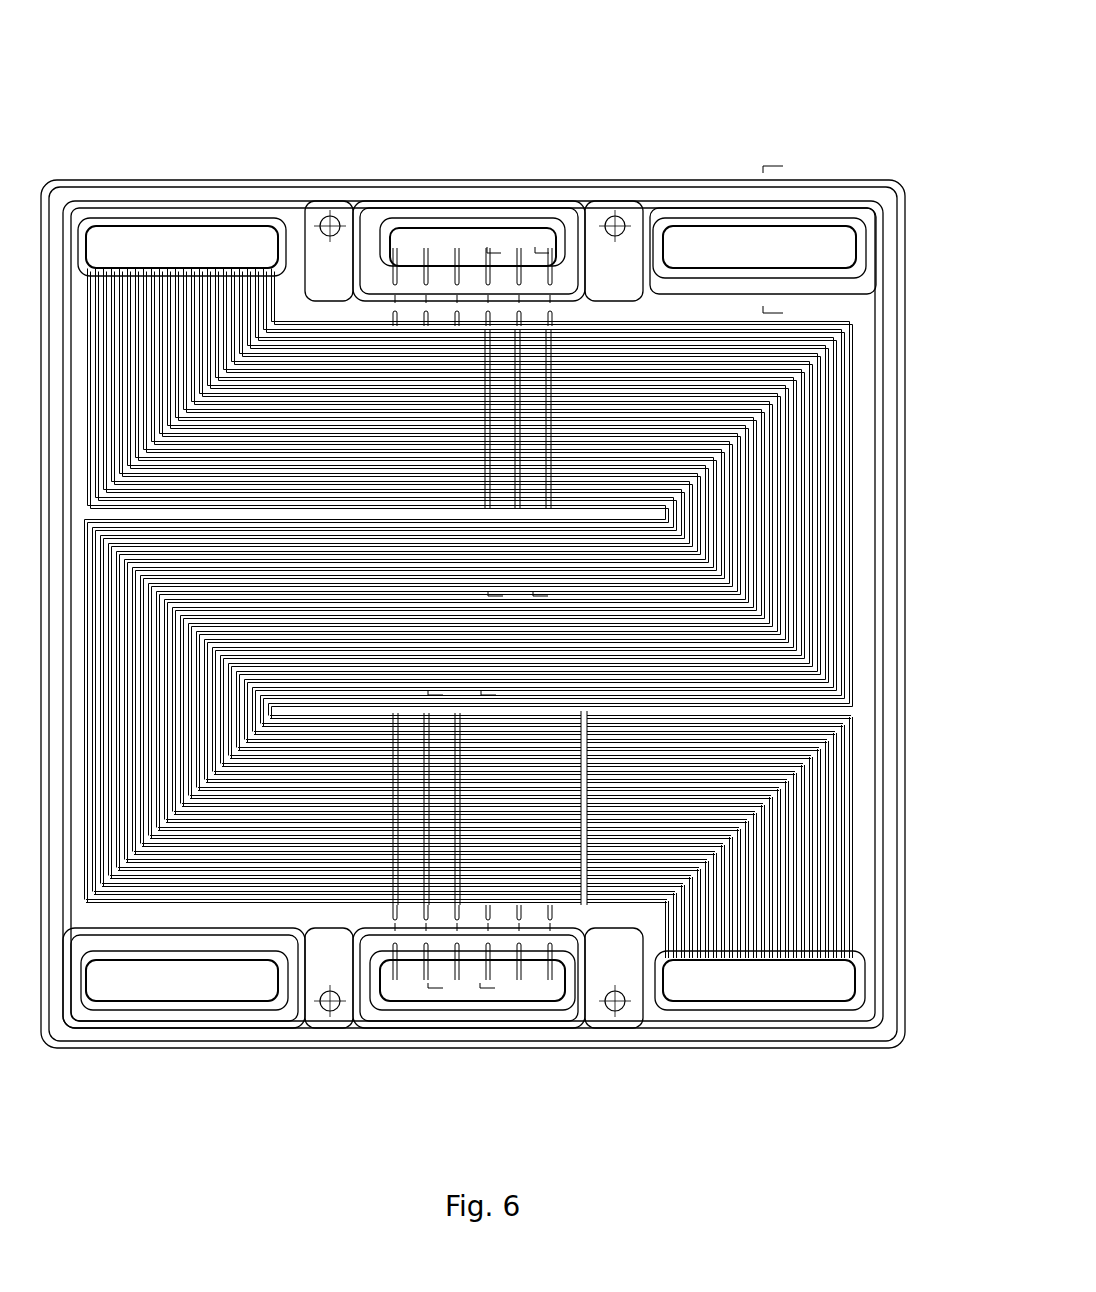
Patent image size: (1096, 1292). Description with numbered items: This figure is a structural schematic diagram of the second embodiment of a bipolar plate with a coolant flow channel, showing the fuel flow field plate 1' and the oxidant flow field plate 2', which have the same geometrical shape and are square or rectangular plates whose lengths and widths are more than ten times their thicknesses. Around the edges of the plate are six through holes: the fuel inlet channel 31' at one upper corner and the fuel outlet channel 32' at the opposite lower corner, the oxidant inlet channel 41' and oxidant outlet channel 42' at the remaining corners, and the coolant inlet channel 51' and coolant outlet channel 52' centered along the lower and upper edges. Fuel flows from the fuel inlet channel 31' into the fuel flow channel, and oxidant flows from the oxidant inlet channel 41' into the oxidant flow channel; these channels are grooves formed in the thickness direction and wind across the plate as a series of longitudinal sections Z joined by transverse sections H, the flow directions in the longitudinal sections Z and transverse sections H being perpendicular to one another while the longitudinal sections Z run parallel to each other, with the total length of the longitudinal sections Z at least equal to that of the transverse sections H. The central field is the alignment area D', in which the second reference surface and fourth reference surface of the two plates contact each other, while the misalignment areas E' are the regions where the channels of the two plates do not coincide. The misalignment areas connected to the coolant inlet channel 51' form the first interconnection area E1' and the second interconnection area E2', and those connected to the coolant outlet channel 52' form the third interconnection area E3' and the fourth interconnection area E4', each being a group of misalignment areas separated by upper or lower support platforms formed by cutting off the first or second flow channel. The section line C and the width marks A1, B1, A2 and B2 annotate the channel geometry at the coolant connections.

The fuel flow field plate 1' is at (473, 550).
The oxidant flow field plate 2' is at (473, 547).
The fuel inlet channel 31' is at (182, 164).
The fuel outlet channel 32' is at (760, 1058).
The oxidant inlet channel 41' is at (763, 160).
The oxidant outlet channel 42' is at (184, 1044).
The coolant inlet channel 51' is at (470, 1032).
The coolant outlet channel 52' is at (469, 188).
The alignment area D' is at (511, 614).
The misalignment area E' is at (333, 930).
The first interconnection area E1' is at (445, 921).
The second interconnection area E2' is at (602, 930).
The third interconnection area E3' is at (567, 290).
The fourth interconnection area E4' is at (469, 495).
The longitudinal section Z is at (625, 845).
The transverse section H is at (800, 890).
The section line C- C is at (773, 238).
The channel width A1 is at (440, 837).
The channel width B1 is at (492, 837).
The channel width A2 is at (499, 425).
The channel width B2 is at (545, 425).